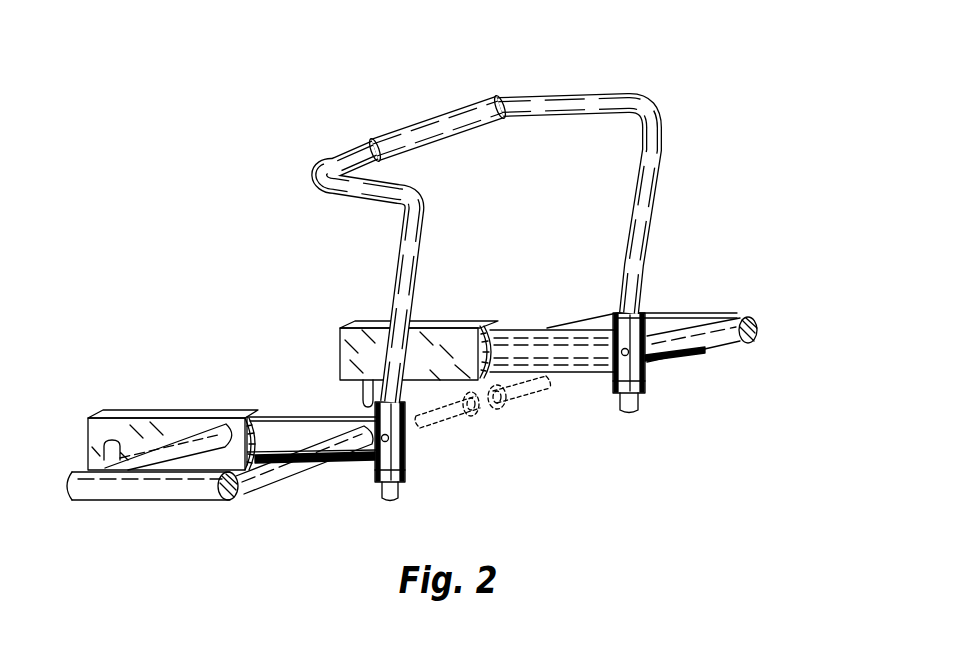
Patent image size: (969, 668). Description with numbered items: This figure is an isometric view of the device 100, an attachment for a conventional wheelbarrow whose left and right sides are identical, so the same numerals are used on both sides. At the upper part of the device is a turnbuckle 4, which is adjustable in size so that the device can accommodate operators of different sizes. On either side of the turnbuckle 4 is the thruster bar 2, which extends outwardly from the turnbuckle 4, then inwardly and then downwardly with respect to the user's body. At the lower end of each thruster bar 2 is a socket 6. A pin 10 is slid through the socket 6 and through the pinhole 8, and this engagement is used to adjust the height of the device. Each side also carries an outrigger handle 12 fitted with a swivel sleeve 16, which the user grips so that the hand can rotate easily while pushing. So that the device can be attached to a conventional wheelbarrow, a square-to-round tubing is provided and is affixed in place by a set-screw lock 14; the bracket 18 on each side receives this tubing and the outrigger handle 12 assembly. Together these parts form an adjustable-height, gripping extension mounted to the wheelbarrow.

The rack assembly 100 is at (198, 90).
The thruster bar 2 is at (318, 164).
The turnbuckle 4 is at (441, 118).
The socket 6 is at (375, 473).
The pinhole 8 is at (406, 443).
The pin 10 is at (527, 397).
The outrigger handle 12 is at (621, 318).
The set-screw lock 14 is at (360, 399).
The swivel sleeve 16 is at (727, 346).
The bracket housing 18 is at (344, 328).